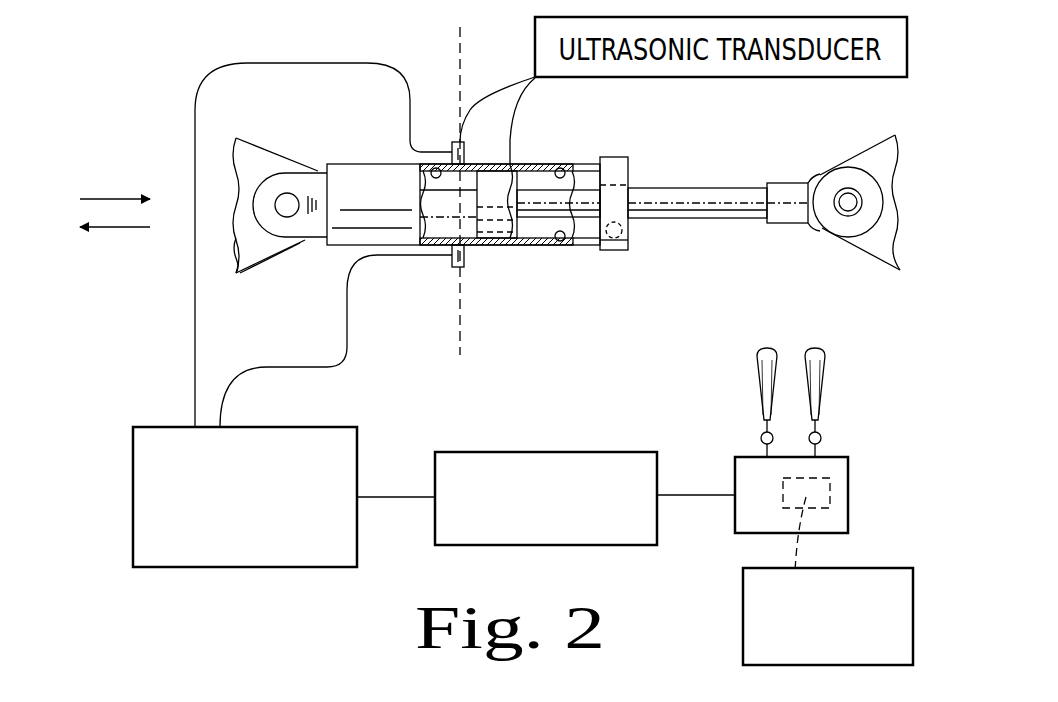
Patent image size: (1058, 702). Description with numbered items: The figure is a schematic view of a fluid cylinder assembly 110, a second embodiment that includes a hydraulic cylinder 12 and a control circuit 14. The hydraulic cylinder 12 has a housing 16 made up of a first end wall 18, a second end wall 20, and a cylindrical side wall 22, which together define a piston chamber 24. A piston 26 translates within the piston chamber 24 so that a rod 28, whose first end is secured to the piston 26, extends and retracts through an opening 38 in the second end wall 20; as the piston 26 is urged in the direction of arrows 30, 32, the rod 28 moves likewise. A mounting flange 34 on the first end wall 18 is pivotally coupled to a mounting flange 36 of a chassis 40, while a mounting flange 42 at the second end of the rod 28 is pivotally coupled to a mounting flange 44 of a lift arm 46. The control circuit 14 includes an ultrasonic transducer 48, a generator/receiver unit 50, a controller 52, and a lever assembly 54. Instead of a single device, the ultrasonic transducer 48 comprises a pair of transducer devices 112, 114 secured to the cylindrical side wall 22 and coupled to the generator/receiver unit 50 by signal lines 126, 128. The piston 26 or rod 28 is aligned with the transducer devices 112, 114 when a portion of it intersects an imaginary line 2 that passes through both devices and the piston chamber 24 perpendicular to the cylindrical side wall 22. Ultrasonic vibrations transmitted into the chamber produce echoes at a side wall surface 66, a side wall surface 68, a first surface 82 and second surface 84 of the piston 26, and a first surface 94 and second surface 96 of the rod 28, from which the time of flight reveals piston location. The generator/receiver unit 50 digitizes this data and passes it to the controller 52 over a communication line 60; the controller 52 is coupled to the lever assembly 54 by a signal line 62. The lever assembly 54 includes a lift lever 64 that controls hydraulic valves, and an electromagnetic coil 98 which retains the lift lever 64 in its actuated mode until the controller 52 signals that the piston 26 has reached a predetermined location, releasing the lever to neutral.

The imaginary line 2 is at (468, 57).
The hydraulic cylinder 12 is at (345, 158).
The control circuit 14 is at (558, 415).
The housing 16 is at (325, 246).
The first end wall 18 is at (322, 168).
The second end wall 20 is at (615, 157).
The cylindrical side wall 22 is at (527, 247).
The piston chamber 24 is at (430, 164).
The piston 26 is at (495, 180).
The rod 28 is at (663, 218).
The arrow 30 is at (105, 199).
The arrow 32 is at (125, 228).
The mounting flange 34 is at (250, 150).
The mounting flange 36 is at (270, 250).
The opening 38 is at (612, 238).
The chassis 40 is at (246, 272).
The mounting flange 42 is at (790, 183).
The mounting flange 44 is at (860, 245).
The lift arm 46 is at (892, 266).
The ultrasonic transducer 48 is at (438, 267).
The generator/receiver unit 50 is at (170, 568).
The controller 52 is at (482, 462).
The lever assembly 54 is at (735, 472).
The communication line 60 is at (395, 498).
The signal line 62 is at (697, 497).
The lift lever 64 is at (830, 352).
The side wall surface 66 is at (558, 246).
The side wall surface 68 is at (562, 167).
The first surface 82 is at (506, 247).
The second surface 84 is at (520, 163).
The first surface 94 is at (705, 218).
The second surface 96 is at (672, 188).
The electromagnetic coil 98 is at (830, 490).
The fluid cylinder assembly 110 is at (724, 145).
The transducer device 112 is at (456, 268).
The transducer device 114 is at (457, 142).
The signal line 126 is at (350, 365).
The signal line 128 is at (195, 322).